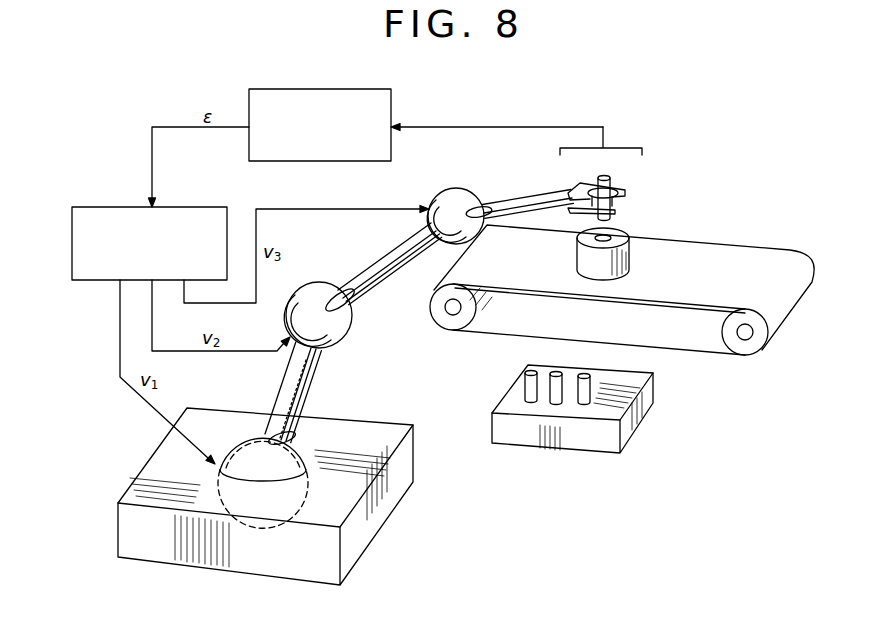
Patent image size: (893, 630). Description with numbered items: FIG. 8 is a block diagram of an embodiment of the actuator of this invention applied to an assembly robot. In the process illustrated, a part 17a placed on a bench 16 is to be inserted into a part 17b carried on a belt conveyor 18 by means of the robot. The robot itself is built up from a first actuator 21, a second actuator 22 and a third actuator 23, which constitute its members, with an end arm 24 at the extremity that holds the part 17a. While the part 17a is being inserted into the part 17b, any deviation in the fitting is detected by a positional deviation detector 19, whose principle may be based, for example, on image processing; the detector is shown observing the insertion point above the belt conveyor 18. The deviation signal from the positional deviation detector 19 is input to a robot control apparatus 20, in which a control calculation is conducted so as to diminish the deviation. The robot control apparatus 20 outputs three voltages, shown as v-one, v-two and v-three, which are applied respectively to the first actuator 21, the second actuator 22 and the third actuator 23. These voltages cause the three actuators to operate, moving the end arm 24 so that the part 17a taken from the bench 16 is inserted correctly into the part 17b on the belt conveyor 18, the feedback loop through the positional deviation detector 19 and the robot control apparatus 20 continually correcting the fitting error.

The bench 16 is at (643, 413).
The part 17a is at (608, 177).
The part 17b is at (625, 223).
The belt conveyor 18 is at (727, 247).
The positional deviation detector 19 is at (392, 101).
The robot control apparatus 20 is at (118, 206).
The first actuator 21 is at (407, 467).
The second actuator 22 is at (322, 374).
The third actuator 23 is at (398, 248).
The end arm 24 is at (533, 198).